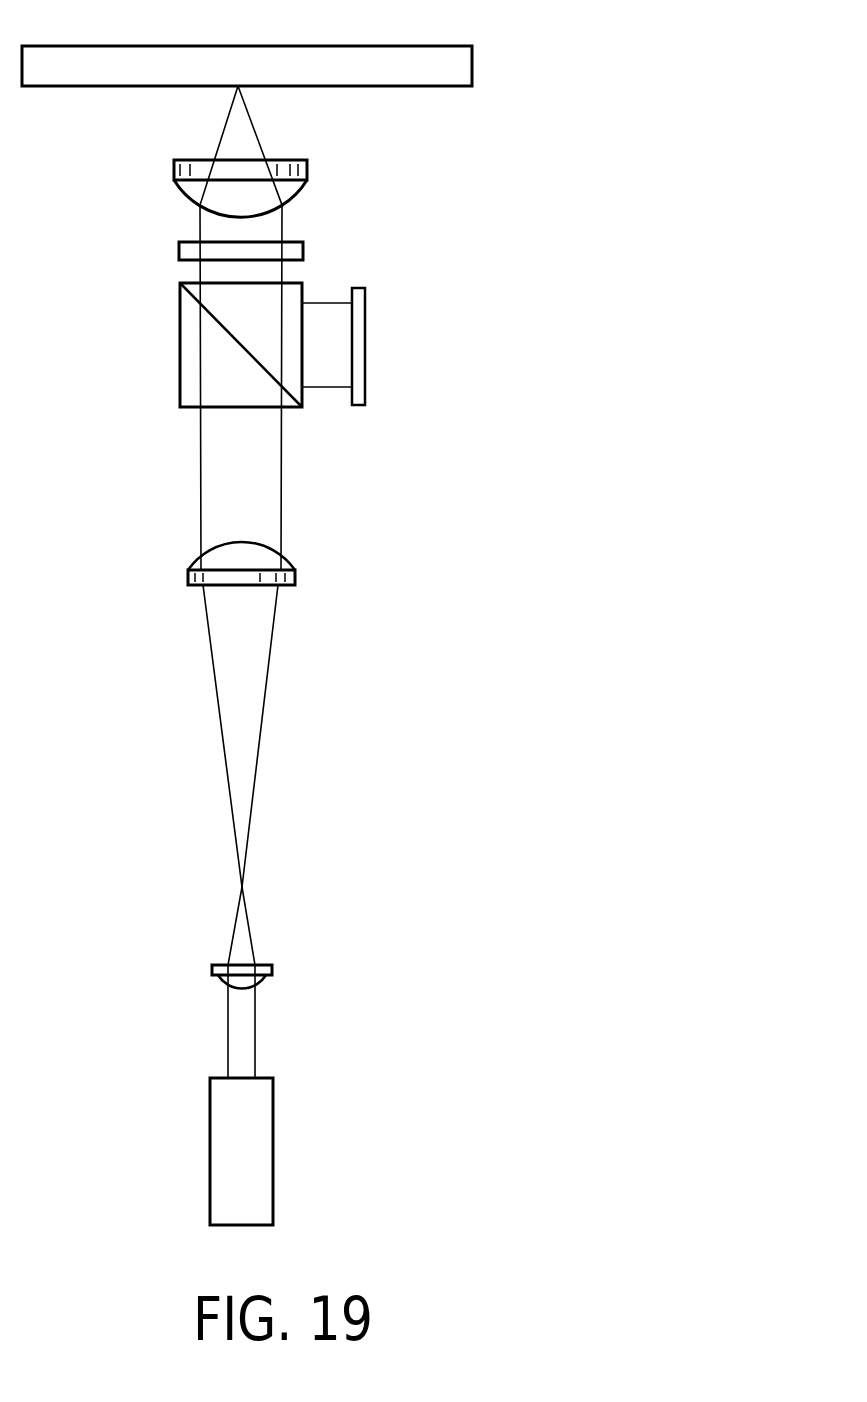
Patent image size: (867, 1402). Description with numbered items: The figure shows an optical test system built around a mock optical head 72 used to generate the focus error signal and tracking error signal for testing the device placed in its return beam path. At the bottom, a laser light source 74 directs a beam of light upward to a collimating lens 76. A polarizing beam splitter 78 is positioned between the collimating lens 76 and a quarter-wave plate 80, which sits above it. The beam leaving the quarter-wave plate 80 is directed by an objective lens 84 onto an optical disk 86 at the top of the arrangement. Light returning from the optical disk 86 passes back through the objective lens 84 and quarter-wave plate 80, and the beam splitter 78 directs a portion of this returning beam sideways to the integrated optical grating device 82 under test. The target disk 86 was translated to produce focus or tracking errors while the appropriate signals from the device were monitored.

The mock optical head 72 is at (593, 300).
The laser light source 74 is at (210, 1133).
The collimating lens 76 is at (188, 580).
The polarizing beam splitter 78 is at (180, 370).
The quarter-wave plate 80 is at (305, 250).
The integrated optical grating device 82 is at (366, 392).
The objective lens 84 is at (174, 170).
The optical disk 86 is at (474, 68).